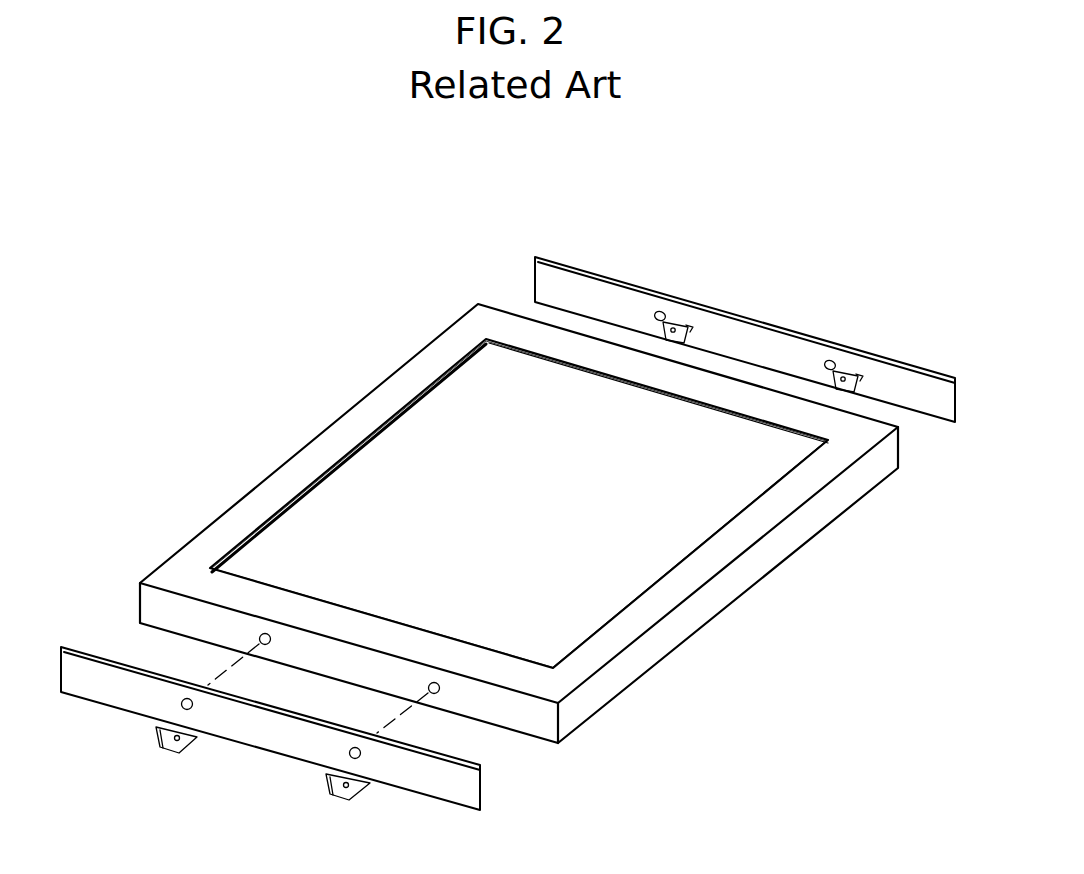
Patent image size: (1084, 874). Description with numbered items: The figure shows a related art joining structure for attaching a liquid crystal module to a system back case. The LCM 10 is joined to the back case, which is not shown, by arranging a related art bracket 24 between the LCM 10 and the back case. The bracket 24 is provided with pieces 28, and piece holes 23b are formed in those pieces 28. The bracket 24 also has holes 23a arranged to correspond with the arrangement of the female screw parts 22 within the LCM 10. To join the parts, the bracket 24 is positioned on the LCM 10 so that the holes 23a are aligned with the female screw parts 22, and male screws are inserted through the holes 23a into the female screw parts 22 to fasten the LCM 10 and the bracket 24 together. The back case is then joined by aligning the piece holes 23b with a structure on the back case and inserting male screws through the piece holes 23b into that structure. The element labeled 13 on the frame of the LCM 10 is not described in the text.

The display panel 10 is at (328, 498).
The frame 13 is at (697, 568).
The fastening hole 22 is at (437, 693).
The fastening hole 23a is at (179, 703).
The fastening hole 23b is at (331, 791).
The bracket 24 is at (543, 283).
The tab 28 is at (165, 745).